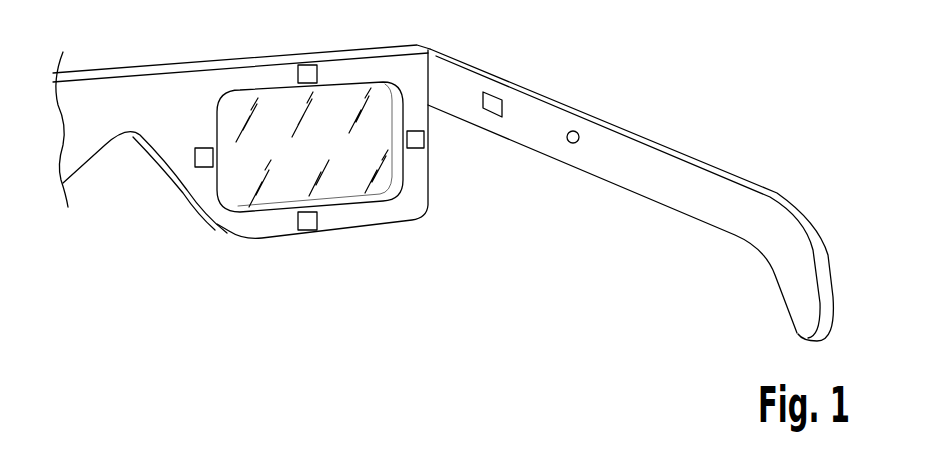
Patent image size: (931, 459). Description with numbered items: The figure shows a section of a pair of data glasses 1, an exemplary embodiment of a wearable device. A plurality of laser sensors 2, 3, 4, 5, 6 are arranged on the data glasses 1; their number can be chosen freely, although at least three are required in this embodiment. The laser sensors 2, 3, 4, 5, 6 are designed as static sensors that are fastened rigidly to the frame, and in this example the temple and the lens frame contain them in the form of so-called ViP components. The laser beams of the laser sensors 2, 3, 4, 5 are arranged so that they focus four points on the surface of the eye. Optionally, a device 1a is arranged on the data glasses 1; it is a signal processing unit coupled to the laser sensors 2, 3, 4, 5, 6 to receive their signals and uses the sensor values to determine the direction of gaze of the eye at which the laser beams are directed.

The data glasses 1 is at (646, 104).
The device 1a is at (574, 131).
The laser sensor 2 is at (310, 73).
The laser sensor 3 is at (200, 158).
The laser sensor 4 is at (307, 228).
The laser sensor 5 is at (424, 138).
The laser sensor 6 is at (490, 98).